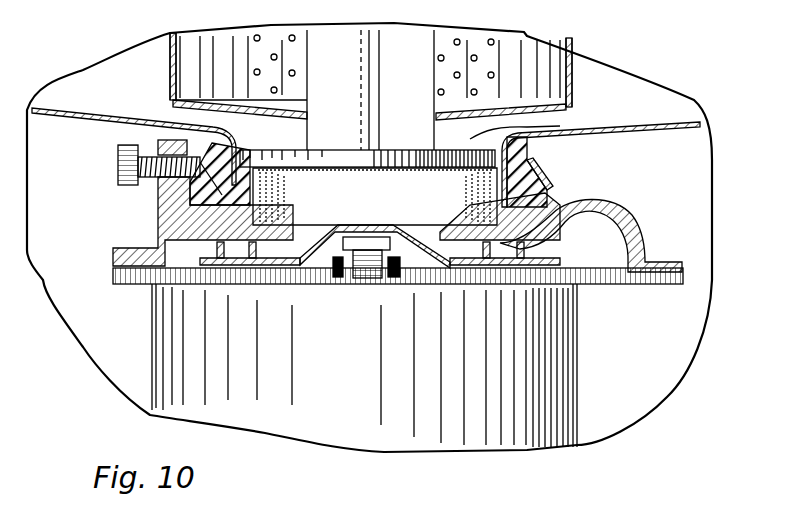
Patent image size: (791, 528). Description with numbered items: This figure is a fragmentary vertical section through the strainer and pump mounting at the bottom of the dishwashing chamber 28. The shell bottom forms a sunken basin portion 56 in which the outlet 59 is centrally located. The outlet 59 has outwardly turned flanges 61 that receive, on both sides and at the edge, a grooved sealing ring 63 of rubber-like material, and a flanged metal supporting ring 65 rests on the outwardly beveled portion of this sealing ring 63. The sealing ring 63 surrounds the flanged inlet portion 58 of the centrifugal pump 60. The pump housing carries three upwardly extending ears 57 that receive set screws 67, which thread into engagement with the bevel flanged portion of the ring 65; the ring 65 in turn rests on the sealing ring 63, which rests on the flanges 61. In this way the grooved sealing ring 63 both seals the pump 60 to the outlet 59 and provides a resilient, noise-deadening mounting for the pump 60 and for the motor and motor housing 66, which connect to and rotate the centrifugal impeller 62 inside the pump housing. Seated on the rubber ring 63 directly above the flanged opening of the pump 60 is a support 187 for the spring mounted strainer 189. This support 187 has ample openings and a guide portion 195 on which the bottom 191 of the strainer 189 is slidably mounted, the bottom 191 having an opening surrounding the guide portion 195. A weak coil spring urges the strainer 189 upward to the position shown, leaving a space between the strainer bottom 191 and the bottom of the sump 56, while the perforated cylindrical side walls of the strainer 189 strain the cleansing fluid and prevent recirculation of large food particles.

The dishwashing chamber 28 is at (77, 91).
The spring mounted strainer 189 is at (547, 67).
The bottom of the strainer 191 is at (185, 110).
The guide portion 195 is at (413, 141).
The support 187 is at (376, 160).
The flanged inlet portion 58 is at (266, 174).
The sunken basin portion 56 is at (683, 120).
The outlet 59 is at (527, 128).
The upwardly extending ears 57 is at (160, 146).
The set screws 67 is at (118, 170).
The outwardly turned flanges 61 is at (540, 200).
The grooved sealing ring 63 is at (510, 150).
The flanged metal supporting ring 65 is at (533, 165).
The centrifugal pump 60 is at (643, 223).
The centrifugal impeller 62 is at (522, 258).
The motor and motor housing 66 is at (535, 362).